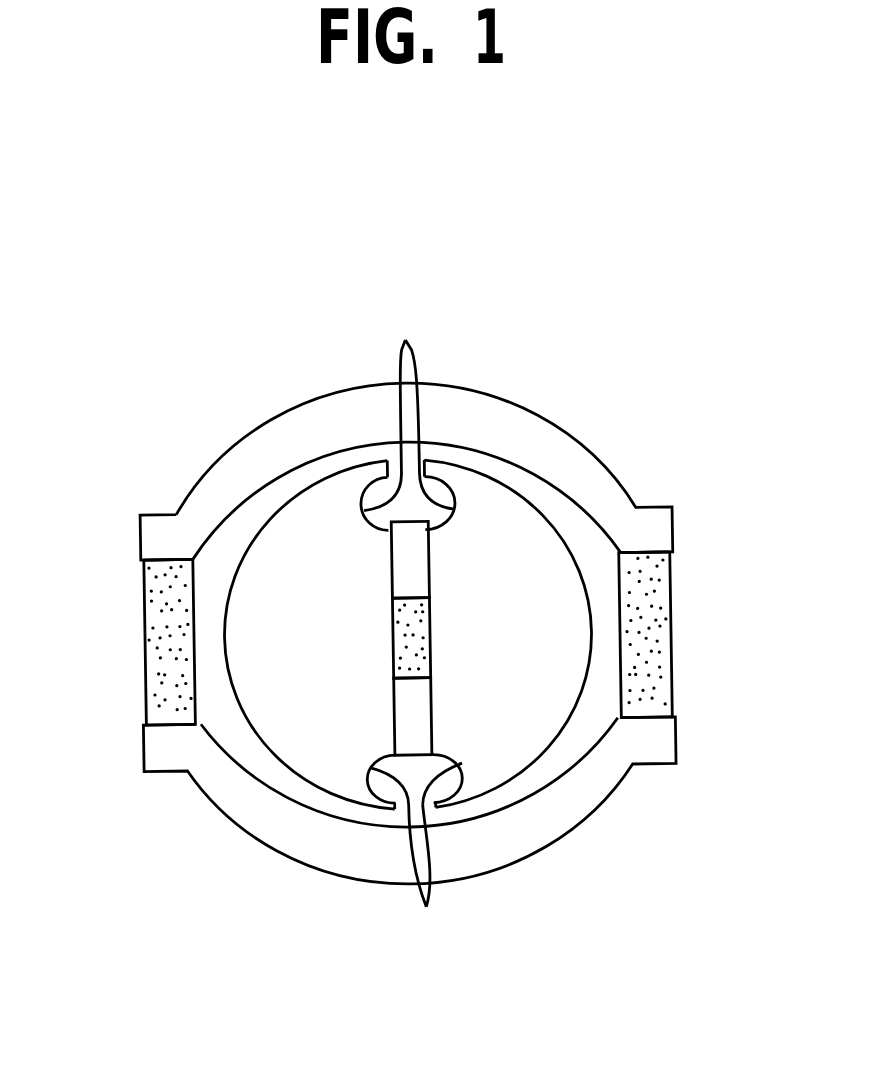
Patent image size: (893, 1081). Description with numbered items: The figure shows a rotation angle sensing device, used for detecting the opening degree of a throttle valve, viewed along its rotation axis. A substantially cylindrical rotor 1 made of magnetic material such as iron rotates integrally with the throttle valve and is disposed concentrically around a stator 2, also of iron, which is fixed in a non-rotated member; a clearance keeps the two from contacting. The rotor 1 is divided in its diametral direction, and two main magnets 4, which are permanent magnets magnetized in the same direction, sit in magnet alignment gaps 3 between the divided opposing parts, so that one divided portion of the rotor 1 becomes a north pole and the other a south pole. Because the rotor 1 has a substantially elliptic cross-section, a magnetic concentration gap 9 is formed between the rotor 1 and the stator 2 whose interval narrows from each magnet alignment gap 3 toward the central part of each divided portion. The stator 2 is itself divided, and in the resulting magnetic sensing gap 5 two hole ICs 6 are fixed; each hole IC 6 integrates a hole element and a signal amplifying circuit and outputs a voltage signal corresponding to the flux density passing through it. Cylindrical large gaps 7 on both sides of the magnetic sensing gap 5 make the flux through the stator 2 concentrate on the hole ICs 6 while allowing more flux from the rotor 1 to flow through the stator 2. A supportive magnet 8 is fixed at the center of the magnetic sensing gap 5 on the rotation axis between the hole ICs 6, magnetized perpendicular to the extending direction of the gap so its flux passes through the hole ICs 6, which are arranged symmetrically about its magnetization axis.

The rotor 1 is at (492, 378).
The stator 2 is at (520, 472).
The magnet alignment gap 3 is at (172, 562).
The main magnet 4 is at (147, 651).
The magnetic sensing gap 5 is at (444, 634).
The hole IC 6 is at (428, 566).
The large gap 7 is at (411, 634).
The supportive magnet 8 is at (392, 612).
The magnetic concentration gap 9 is at (550, 502).